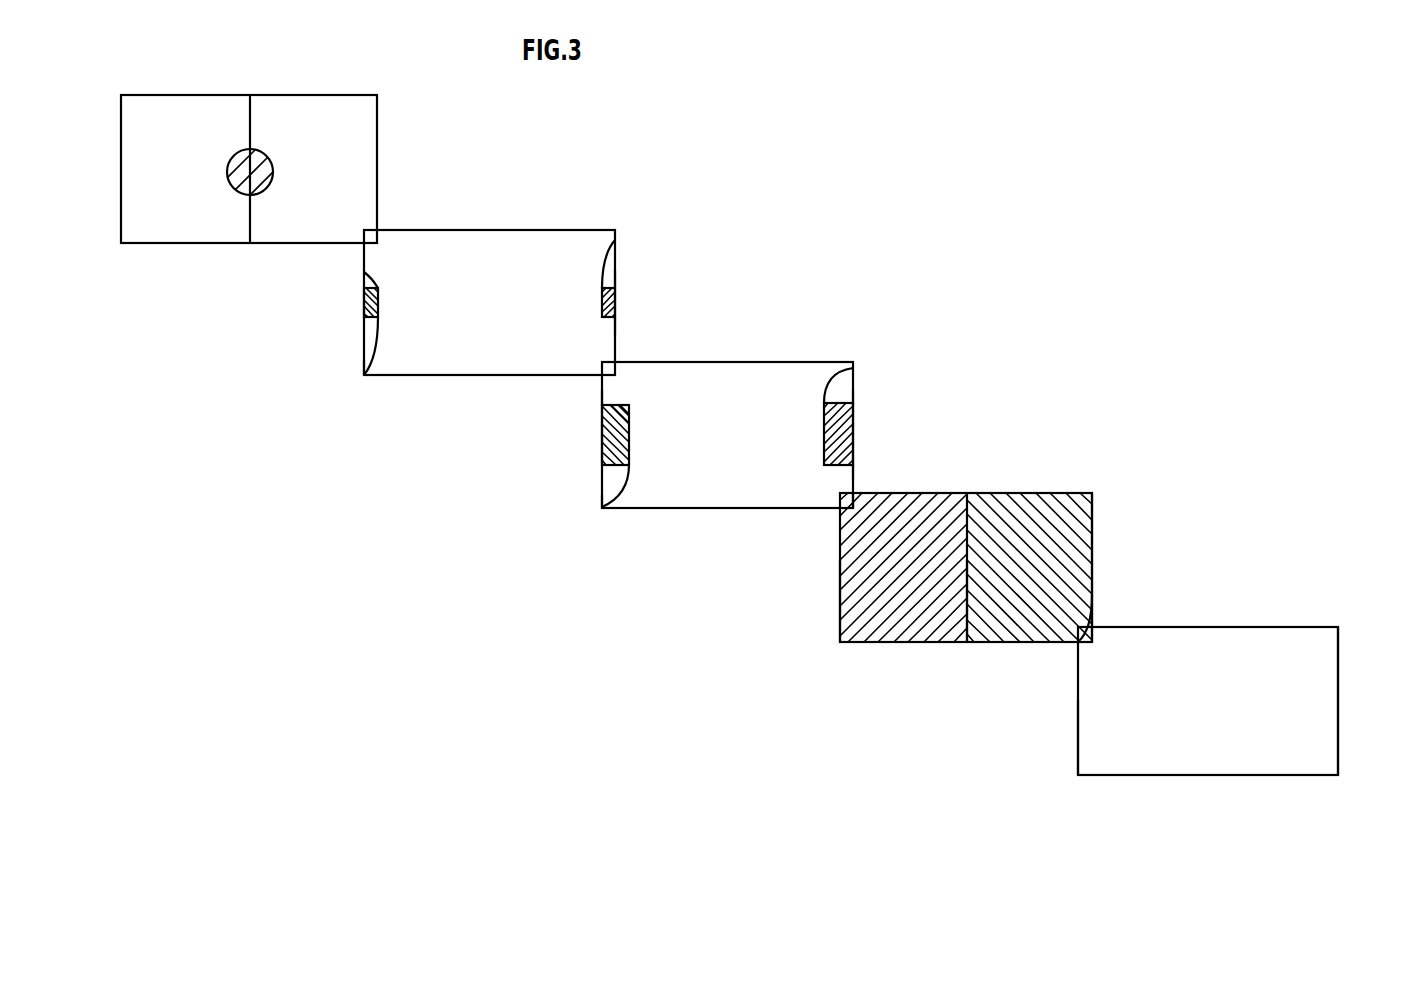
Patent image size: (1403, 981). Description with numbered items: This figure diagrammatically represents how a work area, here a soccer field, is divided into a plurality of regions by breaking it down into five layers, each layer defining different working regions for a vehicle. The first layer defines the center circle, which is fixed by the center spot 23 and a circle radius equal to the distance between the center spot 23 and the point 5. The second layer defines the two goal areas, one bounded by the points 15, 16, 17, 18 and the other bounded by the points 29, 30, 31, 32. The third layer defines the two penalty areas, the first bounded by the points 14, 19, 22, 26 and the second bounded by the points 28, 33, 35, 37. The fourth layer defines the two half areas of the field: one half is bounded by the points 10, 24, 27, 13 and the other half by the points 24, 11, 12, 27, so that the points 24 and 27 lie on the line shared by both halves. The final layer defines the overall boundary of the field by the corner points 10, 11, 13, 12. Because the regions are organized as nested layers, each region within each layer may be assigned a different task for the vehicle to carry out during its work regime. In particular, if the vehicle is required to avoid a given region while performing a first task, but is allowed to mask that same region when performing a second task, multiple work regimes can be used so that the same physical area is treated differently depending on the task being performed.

The circle radius point 5 is at (248, 148).
The center spot 23 is at (267, 147).
The boundary corner point 10 is at (838, 493).
The boundary corner point 11 is at (1092, 493).
The boundary corner point 12 is at (1092, 642).
The boundary corner point 13 is at (840, 642).
The penalty area point 14 is at (602, 405).
The goal area point 15 is at (364, 292).
The goal area point 16 is at (366, 274).
The goal area point 17 is at (364, 368).
The goal area point 18 is at (364, 320).
The penalty area point 19 is at (602, 465).
The penalty area point 22 is at (602, 420).
The half-line point 24 is at (967, 493).
The penalty area point 26 is at (602, 507).
The half-line point 27 is at (967, 642).
The penalty area point 28 is at (853, 406).
The goal area point 29 is at (615, 286).
The goal area point 30 is at (615, 250).
The goal area point 31 is at (615, 298).
The goal area point 32 is at (615, 318).
The penalty area point 33 is at (853, 463).
The penalty area point 35 is at (853, 371).
The penalty area point 37 is at (836, 450).